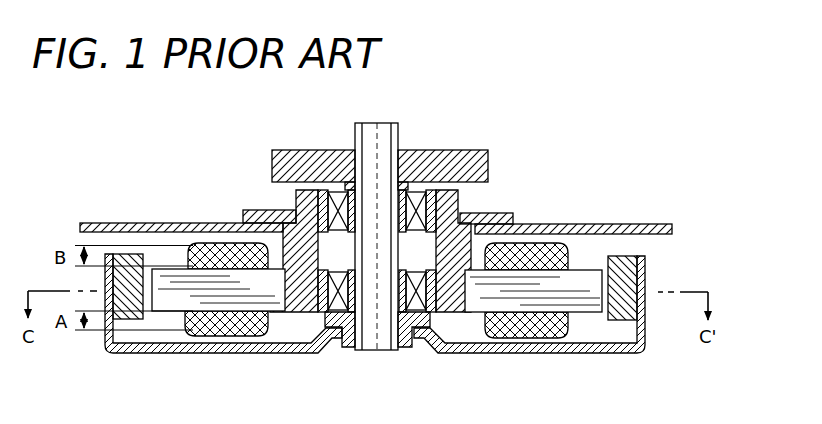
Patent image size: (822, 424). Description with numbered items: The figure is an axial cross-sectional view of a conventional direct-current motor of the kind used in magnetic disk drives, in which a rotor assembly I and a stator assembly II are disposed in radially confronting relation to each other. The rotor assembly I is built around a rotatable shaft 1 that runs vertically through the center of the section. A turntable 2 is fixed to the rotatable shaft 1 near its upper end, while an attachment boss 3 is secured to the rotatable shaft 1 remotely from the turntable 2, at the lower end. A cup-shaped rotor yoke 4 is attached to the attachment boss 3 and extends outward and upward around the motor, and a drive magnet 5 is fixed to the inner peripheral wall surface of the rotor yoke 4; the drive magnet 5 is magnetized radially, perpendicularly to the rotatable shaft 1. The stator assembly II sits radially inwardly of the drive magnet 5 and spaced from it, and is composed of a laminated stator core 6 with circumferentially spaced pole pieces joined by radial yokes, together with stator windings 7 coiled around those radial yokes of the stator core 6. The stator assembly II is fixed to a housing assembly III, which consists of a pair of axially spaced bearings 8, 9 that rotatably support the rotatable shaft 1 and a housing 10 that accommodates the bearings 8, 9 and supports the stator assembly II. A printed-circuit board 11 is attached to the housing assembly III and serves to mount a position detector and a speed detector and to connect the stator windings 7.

The rotatable shaft 1 is at (385, 125).
The turntable 2 is at (315, 150).
The attachment boss 3 is at (341, 348).
The rotor yoke 4 is at (138, 353).
The drive magnet 5 is at (617, 256).
The laminated stator core 6 is at (538, 302).
The stator windings 7 is at (215, 337).
The bearing 8 is at (462, 152).
The bearing 9 is at (316, 313).
The housing 10 is at (500, 213).
The printed-circuit board 11 is at (140, 222).
The rotor assembly I is at (588, 358).
The stator assembly II is at (211, 242).
The housing assembly III is at (262, 205).